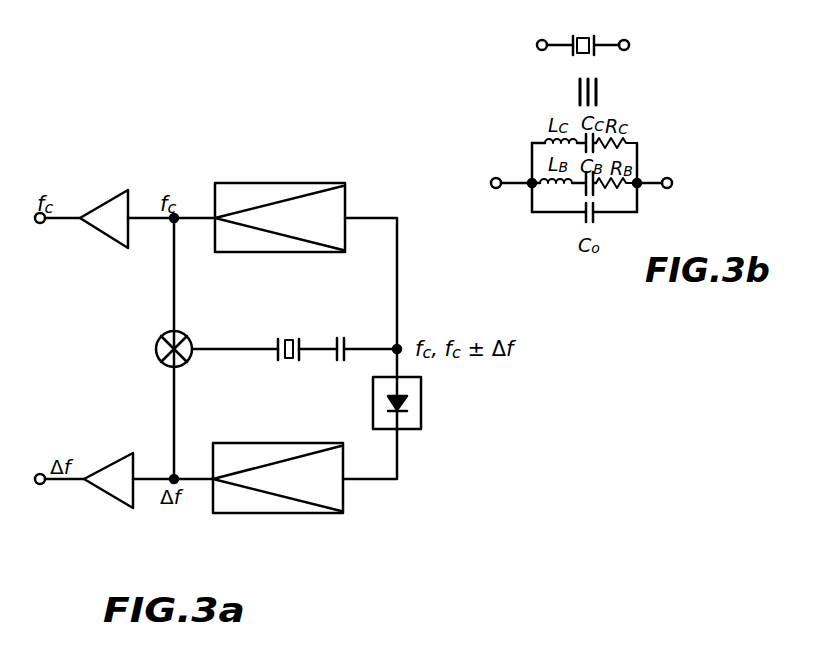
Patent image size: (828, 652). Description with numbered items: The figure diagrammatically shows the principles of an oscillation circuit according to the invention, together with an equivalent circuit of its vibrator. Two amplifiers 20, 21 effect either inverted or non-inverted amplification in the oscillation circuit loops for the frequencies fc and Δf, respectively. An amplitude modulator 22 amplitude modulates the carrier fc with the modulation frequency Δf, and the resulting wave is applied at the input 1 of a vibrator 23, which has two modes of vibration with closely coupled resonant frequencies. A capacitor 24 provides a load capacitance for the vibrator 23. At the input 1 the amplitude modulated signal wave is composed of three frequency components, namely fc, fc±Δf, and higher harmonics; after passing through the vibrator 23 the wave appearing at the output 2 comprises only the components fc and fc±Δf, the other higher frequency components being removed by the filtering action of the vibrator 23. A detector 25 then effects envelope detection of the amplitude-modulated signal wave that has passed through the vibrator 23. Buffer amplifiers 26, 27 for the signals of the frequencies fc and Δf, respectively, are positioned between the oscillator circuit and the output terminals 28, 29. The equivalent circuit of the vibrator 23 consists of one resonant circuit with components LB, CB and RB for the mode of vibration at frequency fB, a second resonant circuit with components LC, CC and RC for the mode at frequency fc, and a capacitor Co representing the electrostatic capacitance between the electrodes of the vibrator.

The input of the vibrator 1 is at (247, 351).
The output of the vibrator 2 is at (395, 346).
The amplifier 20 is at (345, 183).
The amplifier 21 is at (298, 443).
The amplitude modulator 22 is at (166, 340).
The vibrator 23 is at (291, 336).
The capacitor 24 is at (341, 362).
The detector 25 is at (419, 430).
The buffer amplifier 26 is at (112, 205).
The buffer amplifier 27 is at (163, 443).
The output terminal 28 is at (37, 224).
The output terminal 29 is at (37, 485).